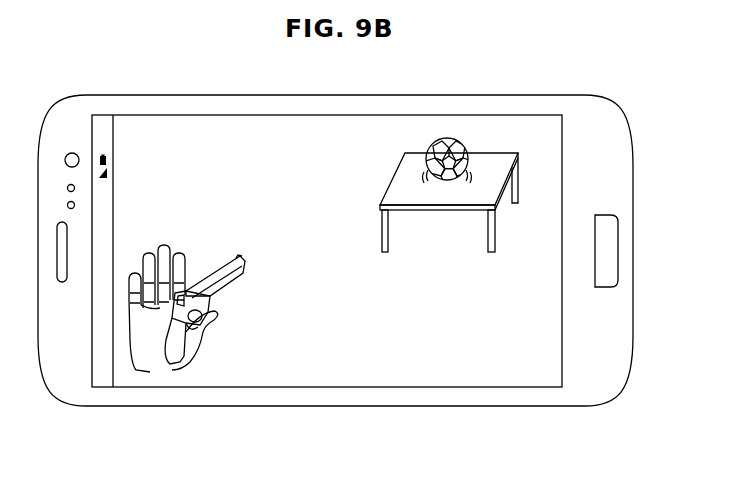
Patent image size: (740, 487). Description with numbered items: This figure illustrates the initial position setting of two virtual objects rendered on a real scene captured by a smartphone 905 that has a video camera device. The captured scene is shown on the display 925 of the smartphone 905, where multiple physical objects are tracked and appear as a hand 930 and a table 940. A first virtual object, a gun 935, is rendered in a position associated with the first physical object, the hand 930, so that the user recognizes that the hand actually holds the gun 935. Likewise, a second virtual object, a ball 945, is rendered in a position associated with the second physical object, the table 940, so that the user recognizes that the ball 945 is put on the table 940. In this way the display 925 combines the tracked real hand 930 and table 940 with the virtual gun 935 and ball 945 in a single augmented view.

The smartphone 905 is at (328, 95).
The display 925 is at (440, 372).
The hand 930 is at (163, 244).
The gun 935 is at (216, 267).
The table 940 is at (397, 182).
The ball 945 is at (453, 147).